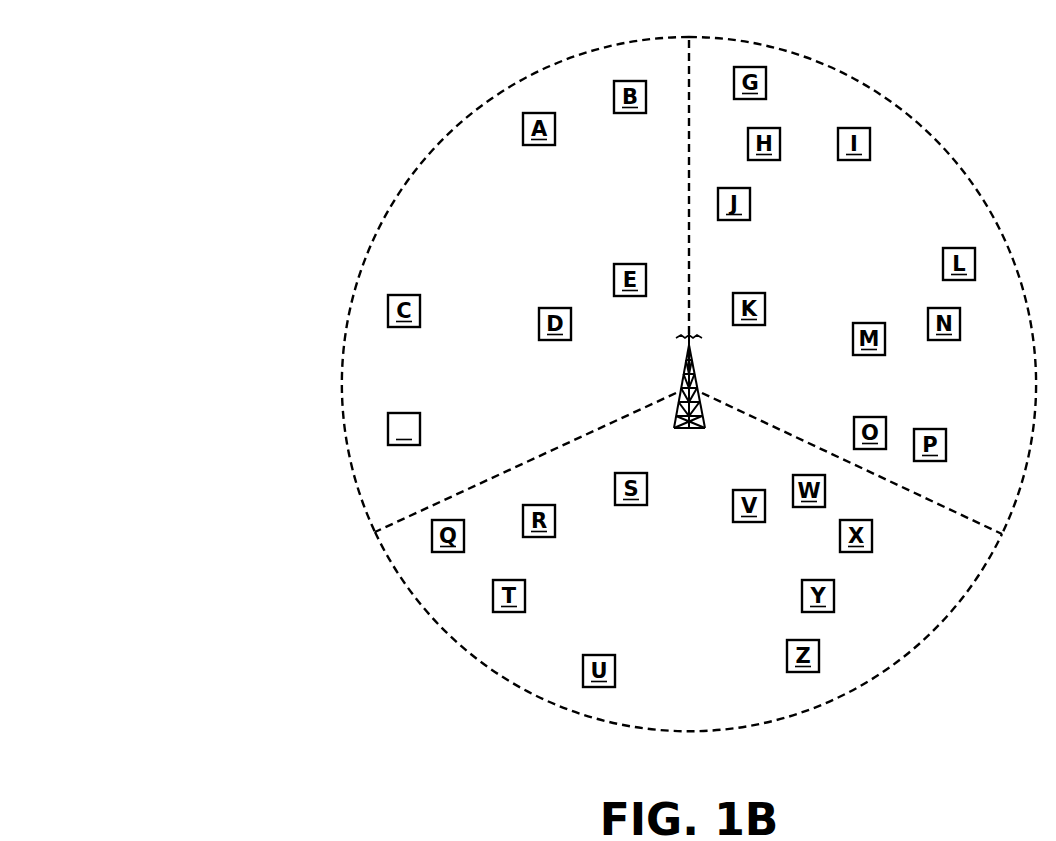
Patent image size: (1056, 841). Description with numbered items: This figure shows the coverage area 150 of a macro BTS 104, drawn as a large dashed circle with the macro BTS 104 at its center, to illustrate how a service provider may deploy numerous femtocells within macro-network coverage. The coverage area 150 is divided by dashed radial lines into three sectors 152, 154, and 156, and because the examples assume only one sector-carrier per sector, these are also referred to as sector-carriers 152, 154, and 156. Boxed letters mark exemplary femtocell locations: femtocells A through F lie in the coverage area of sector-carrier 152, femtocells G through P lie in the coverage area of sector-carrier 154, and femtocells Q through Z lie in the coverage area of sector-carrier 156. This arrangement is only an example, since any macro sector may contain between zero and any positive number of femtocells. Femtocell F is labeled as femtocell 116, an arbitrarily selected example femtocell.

The coverage area 150 is at (218, 82).
The macro BTS 104 is at (768, 450).
The femtocell 116 is at (388, 431).
The sector 152 is at (508, 246).
The sector 154 is at (840, 246).
The sector 156 is at (675, 606).